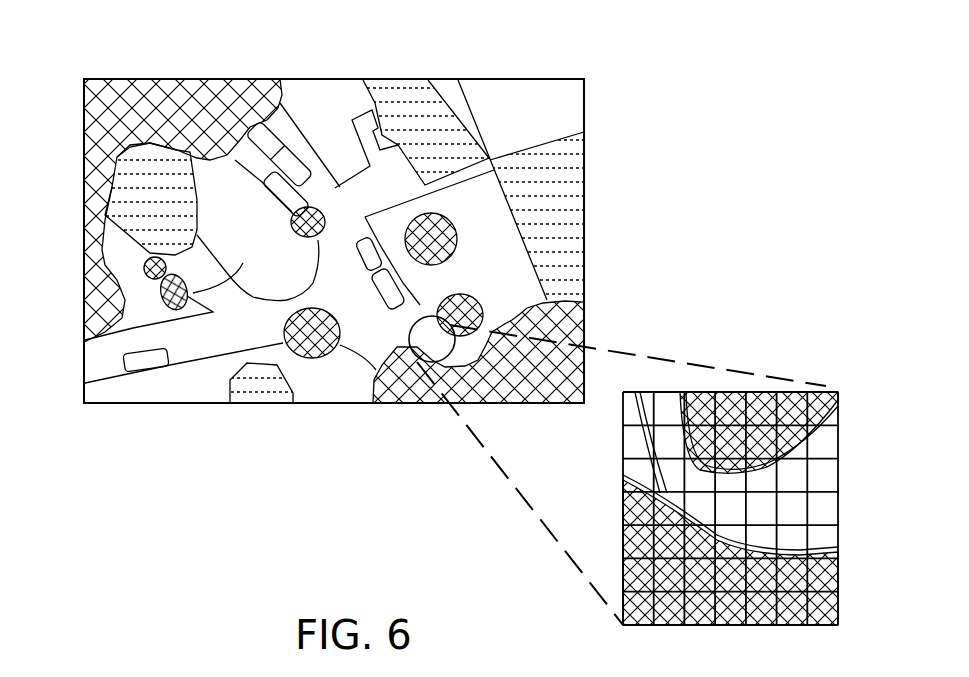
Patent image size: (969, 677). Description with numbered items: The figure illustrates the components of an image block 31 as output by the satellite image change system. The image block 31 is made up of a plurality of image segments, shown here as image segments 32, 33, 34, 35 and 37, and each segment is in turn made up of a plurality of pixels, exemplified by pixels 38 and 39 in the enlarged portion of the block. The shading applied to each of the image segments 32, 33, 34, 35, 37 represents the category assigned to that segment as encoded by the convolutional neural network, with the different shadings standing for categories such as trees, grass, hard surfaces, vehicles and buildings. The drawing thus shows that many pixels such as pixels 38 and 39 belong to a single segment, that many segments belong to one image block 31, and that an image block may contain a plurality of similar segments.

The image block 31 is at (567, 79).
The image segment 32 is at (577, 192).
The image segment 33 is at (402, 390).
The image segment 34 is at (307, 357).
The image segment 35 is at (160, 290).
The image segment 37 is at (158, 228).
The pixel 38 is at (632, 577).
The pixel 39 is at (838, 503).